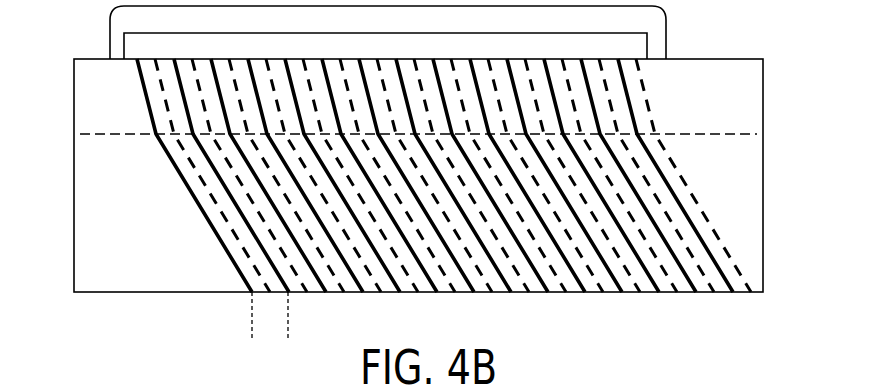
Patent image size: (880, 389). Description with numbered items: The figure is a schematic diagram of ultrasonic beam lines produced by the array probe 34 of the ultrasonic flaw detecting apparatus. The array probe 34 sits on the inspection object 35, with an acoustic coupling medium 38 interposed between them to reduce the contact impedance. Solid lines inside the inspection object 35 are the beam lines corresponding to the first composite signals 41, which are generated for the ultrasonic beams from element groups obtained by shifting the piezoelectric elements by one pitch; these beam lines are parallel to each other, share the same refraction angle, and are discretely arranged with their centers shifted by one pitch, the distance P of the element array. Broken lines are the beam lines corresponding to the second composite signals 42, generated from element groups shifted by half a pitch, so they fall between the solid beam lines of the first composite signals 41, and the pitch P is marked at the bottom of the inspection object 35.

The array probe 34 is at (110, 37).
The acoustic coupling medium 38 is at (74, 93).
The inspection object 35 is at (74, 175).
The first composite signals 41 is at (688, 158).
The second composite signals 42 is at (716, 188).
The pitch P is at (335, 322).